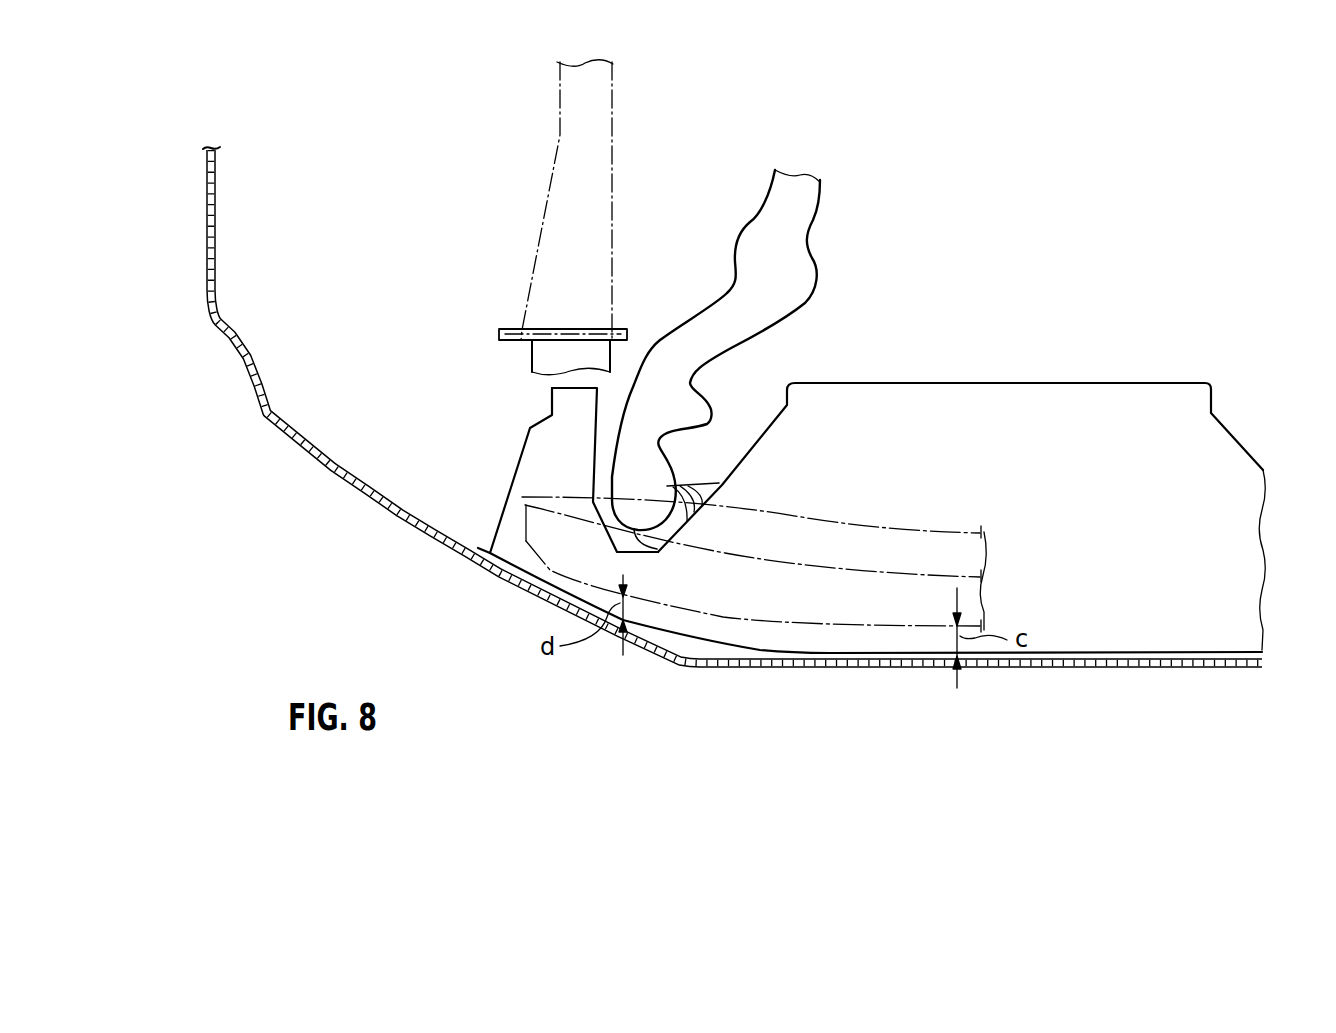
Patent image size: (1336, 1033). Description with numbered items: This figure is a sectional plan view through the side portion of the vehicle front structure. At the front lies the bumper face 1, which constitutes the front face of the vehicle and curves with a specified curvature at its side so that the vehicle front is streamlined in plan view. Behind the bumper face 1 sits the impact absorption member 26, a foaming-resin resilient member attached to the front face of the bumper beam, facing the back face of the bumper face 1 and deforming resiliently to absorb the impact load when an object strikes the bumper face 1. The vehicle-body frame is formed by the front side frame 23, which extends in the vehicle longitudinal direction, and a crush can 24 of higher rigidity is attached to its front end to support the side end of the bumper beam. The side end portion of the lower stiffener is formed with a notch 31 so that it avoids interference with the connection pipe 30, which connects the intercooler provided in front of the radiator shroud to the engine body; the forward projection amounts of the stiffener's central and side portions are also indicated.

The bumper face 1 is at (1122, 668).
The front side frame 23 is at (552, 170).
The crush can 24 is at (532, 353).
The impact absorption member 26 is at (1117, 396).
The connection pipe 30 is at (657, 362).
The notch 31 is at (742, 476).